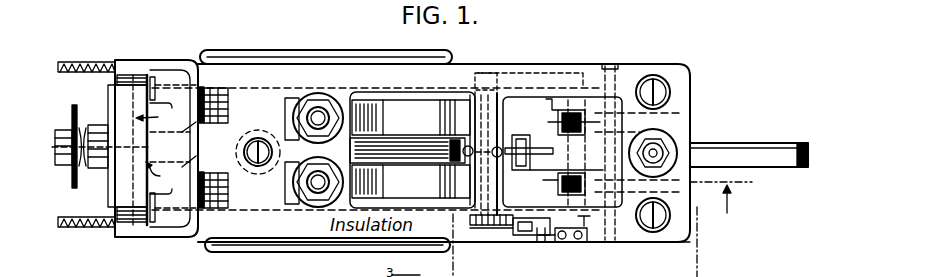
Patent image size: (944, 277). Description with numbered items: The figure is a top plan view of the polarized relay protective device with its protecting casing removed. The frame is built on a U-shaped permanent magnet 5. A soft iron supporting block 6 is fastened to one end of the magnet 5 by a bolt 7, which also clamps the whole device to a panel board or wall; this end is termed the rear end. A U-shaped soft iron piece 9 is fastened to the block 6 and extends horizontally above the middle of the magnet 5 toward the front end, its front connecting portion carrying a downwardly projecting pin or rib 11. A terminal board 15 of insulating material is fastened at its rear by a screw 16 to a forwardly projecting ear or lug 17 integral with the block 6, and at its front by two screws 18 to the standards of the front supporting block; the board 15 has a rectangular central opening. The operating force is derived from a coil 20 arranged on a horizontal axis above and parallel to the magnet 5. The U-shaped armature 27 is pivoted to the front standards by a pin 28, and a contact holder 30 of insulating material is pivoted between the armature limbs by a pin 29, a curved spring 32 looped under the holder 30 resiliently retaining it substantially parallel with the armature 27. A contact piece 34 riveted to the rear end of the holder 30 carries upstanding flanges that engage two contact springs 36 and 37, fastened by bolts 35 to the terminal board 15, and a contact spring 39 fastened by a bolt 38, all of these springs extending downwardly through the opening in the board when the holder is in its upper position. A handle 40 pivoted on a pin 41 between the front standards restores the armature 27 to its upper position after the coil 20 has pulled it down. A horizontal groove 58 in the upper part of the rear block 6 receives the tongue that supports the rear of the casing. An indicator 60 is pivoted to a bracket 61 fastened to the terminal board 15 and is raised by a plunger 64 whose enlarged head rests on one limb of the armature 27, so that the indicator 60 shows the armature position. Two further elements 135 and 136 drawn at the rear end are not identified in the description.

The permanent magnet 5 is at (110, 89).
The supporting block 6 is at (183, 222).
The bolt 7 is at (82, 142).
The U-shaped piece 9 is at (202, 67).
The pin or rib 11 is at (481, 93).
The terminal board 15 is at (452, 72).
The screw 16 is at (258, 164).
The ear or lug 17 is at (213, 147).
The screws 18 is at (660, 90).
The coil 20 is at (352, 240).
The armature 27 is at (503, 87).
The pin 28 is at (609, 236).
The pin 29 is at (568, 243).
The contact holder 30 is at (568, 114).
The curved spring 32 is at (560, 180).
The contact piece 34 is at (503, 136).
The bolts 35 is at (316, 112).
The contact spring 36 is at (468, 118).
The contact spring 37 is at (468, 183).
The bolt 38 is at (663, 150).
The contact spring 39 is at (530, 153).
The handle 40 is at (749, 155).
The pin 41 is at (634, 78).
The horizontal groove 58 is at (166, 118).
The indicator 60 is at (490, 227).
The bracket 61 is at (562, 232).
The plunger 64 is at (526, 234).
The lower rod 135 is at (97, 230).
The upper rod 136 is at (80, 62).